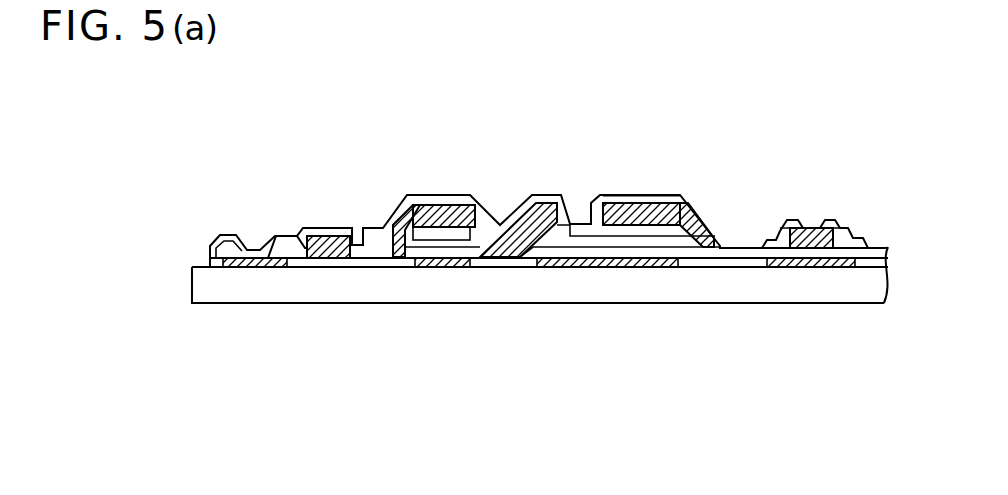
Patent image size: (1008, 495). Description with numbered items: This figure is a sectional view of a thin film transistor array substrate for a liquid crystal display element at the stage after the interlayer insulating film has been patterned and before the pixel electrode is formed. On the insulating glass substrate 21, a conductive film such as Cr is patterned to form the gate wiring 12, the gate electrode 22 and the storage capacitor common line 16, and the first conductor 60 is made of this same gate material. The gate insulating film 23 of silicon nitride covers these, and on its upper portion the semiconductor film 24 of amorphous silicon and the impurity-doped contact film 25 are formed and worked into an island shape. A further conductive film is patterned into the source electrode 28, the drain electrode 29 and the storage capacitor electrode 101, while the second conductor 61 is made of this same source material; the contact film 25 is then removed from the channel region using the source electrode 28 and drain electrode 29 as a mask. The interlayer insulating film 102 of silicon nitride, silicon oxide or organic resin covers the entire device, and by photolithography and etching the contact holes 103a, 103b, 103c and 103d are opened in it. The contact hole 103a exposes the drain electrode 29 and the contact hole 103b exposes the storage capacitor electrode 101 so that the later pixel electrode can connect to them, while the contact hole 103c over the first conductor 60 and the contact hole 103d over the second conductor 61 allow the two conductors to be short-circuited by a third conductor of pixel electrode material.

The substrate 21 is at (863, 297).
The gate insulating film 23 is at (217, 263).
The first conductor 60 is at (275, 262).
The second conductor 61 is at (340, 260).
The gate wiring 12 is at (450, 262).
The gate electrode 22 is at (588, 263).
The storage capacitor common line 16 is at (797, 265).
The interlayer insulating film 102 is at (222, 237).
The storage capacitor electrode 101 is at (827, 230).
The semiconductor film 24 is at (430, 242).
The contact film 25 is at (441, 230).
The source electrode 28 is at (550, 208).
The drain electrode 29 is at (622, 203).
The contact hole 103a is at (637, 190).
The contact hole 103b is at (810, 210).
The contact hole 103c is at (253, 234).
The contact hole 103d is at (329, 223).